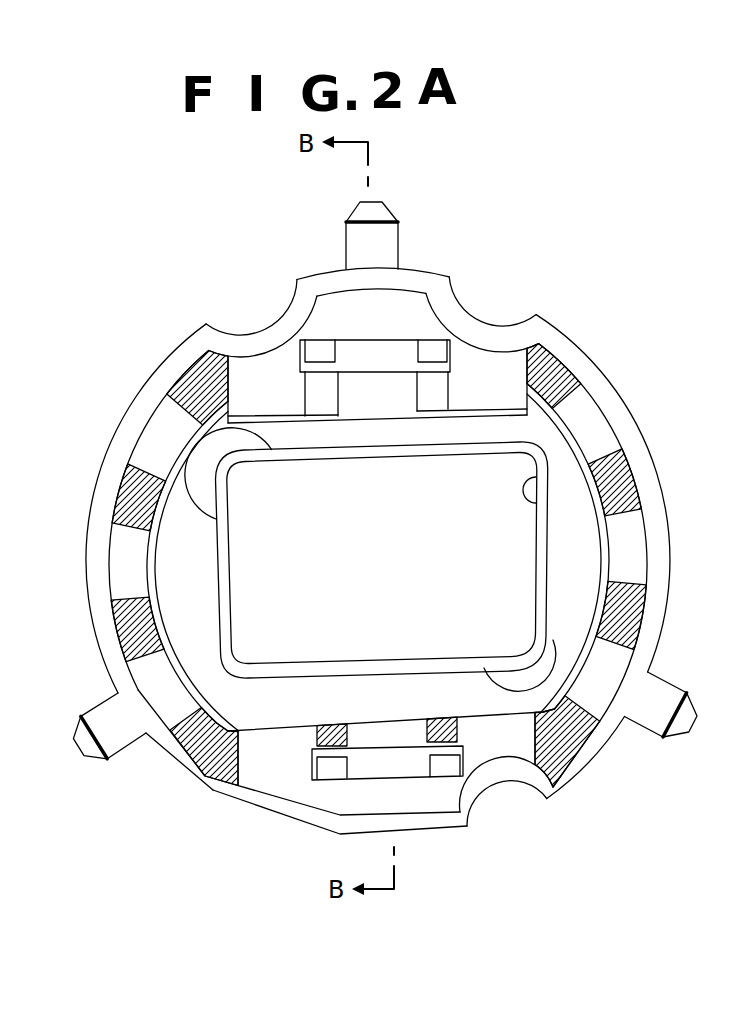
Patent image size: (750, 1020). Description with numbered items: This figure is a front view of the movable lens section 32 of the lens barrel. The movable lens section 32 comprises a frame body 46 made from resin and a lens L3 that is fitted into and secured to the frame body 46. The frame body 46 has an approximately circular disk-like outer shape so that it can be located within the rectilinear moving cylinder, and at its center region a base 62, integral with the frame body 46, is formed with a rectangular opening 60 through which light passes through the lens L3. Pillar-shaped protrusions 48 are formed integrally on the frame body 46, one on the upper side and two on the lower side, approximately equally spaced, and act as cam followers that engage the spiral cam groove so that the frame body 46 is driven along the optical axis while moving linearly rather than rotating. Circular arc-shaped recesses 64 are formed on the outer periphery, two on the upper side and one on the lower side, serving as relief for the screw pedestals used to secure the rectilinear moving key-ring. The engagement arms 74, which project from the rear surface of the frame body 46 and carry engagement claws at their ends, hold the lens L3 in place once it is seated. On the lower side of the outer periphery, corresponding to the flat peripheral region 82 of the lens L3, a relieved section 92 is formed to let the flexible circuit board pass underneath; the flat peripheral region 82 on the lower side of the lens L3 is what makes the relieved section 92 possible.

The movable lens section 32 is at (560, 185).
The frame body 46 is at (575, 346).
The pillar-shaped protrusion 48 is at (388, 240).
The rectangular opening 60 is at (528, 482).
The base 62 is at (178, 570).
The circular arc-shaped recess 64 is at (268, 330).
The engagement arm 74 is at (430, 347).
The flat peripheral region 82 is at (556, 756).
The relieved section 92 is at (262, 812).
The lens L3 is at (520, 554).